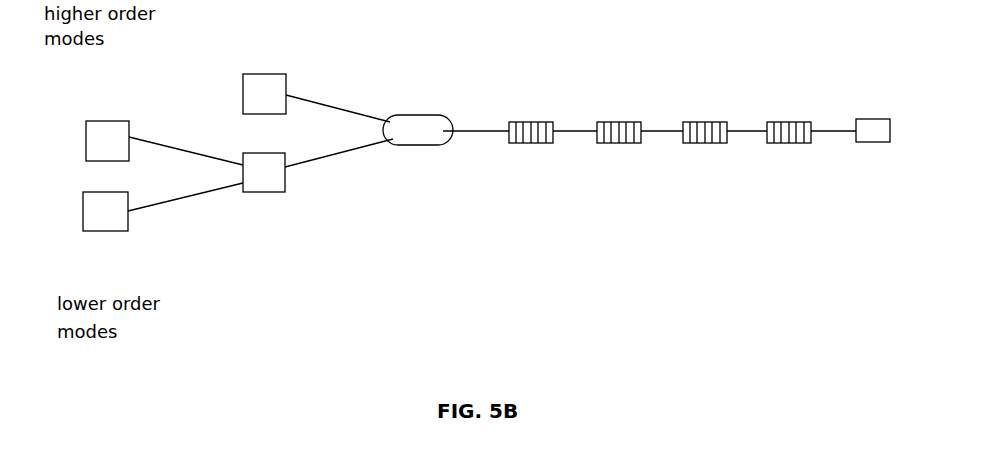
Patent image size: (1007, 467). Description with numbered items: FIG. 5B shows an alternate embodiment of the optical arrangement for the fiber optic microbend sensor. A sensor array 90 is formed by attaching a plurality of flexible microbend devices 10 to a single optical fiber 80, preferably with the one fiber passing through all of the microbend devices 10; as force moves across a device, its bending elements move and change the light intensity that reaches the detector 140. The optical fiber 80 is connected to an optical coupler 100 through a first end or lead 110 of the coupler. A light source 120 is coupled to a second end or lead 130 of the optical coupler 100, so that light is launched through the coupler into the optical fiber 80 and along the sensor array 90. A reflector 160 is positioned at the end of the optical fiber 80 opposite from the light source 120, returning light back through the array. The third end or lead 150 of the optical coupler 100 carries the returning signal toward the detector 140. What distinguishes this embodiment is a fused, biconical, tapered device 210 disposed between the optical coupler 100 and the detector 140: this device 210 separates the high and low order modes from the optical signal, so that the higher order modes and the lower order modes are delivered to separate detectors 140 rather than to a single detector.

The flexible microbend device 10 is at (513, 102).
The optical fiber 80 is at (495, 130).
The sensor array 90 is at (793, 144).
The optical coupler 100 is at (435, 115).
The first end or lead 110 is at (460, 133).
The light source 120 is at (262, 74).
The second end or lead 130 is at (368, 116).
The detector 140 is at (121, 121).
The third end or lead 150 is at (338, 153).
The reflector 160 is at (869, 143).
The fused, biconical, tapered device 210 is at (250, 193).